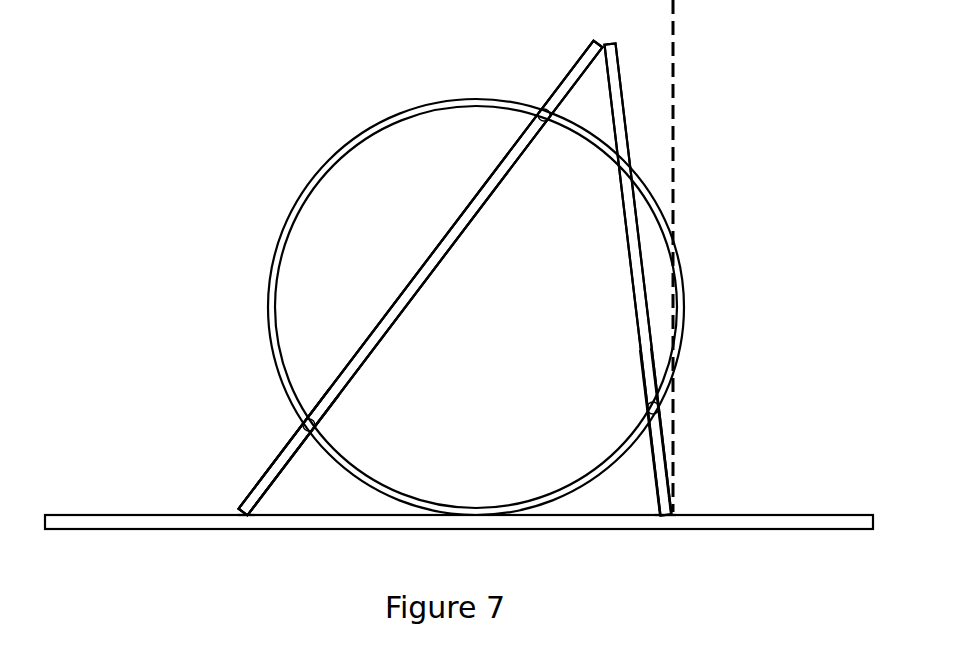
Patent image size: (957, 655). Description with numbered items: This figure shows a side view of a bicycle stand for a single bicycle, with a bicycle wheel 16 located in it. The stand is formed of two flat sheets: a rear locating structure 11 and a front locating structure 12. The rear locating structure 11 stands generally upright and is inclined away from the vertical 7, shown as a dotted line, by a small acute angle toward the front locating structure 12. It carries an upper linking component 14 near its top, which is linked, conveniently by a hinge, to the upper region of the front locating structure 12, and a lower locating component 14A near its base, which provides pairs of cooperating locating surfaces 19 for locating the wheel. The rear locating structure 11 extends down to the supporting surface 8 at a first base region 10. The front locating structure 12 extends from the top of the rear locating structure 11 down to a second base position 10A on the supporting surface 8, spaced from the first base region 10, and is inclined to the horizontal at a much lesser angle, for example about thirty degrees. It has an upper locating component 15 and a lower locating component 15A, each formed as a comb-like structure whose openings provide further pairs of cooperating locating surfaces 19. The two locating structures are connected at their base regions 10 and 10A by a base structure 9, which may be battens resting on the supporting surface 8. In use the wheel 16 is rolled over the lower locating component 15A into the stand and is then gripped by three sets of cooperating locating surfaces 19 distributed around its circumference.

The vertical 7 is at (674, 27).
The supporting surface 8 is at (747, 515).
The base structure 9 is at (388, 532).
The first base region 10 is at (657, 518).
The second base position 10A is at (255, 529).
The rear locating structure 11 is at (642, 280).
The front locating structure 12 is at (392, 298).
The upper linking component 14 is at (625, 98).
The lower locating component 14A is at (665, 433).
The upper locating component 15 is at (562, 80).
The lower locating component 15A is at (280, 452).
The bicycle wheel 16 is at (283, 232).
The cooperating locating surfaces 19 is at (547, 125).